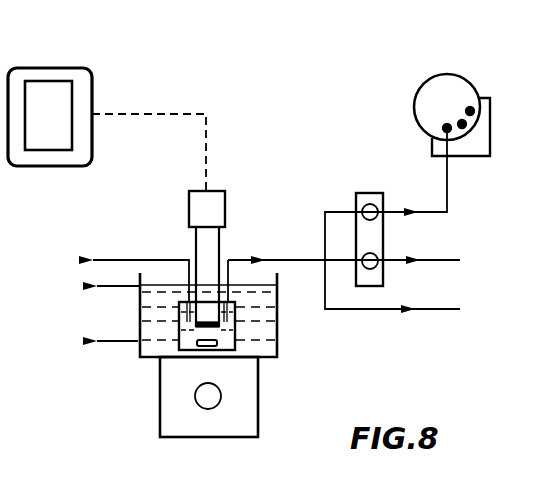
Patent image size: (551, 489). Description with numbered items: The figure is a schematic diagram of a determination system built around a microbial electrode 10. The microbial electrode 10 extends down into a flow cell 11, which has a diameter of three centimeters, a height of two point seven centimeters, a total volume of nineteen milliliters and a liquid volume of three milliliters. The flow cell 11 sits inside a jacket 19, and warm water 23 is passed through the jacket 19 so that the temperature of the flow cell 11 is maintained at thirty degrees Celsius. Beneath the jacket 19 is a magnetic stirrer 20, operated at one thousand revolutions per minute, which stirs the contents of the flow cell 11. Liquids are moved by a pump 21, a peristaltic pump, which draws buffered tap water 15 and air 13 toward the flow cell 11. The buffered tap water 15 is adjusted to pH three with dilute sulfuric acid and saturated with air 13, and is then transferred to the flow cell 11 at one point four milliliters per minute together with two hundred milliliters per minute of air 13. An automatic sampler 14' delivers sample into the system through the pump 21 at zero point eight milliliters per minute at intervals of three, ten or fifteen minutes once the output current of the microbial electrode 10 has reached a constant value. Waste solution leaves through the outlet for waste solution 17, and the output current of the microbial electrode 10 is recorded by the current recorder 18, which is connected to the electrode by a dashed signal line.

The current recorder 18 is at (92, 72).
The microbial electrode 10 is at (190, 242).
The outlet for waste solution 17 is at (124, 259).
The warm water 23 is at (122, 286).
The jacket 19 is at (277, 357).
The flow cell 11 is at (237, 329).
The magnetic stirrer 20 is at (160, 415).
The pump 21 is at (364, 192).
The automatic sampler 14' is at (407, 175).
The buffered tap water 15 is at (440, 259).
The air 13 is at (444, 308).